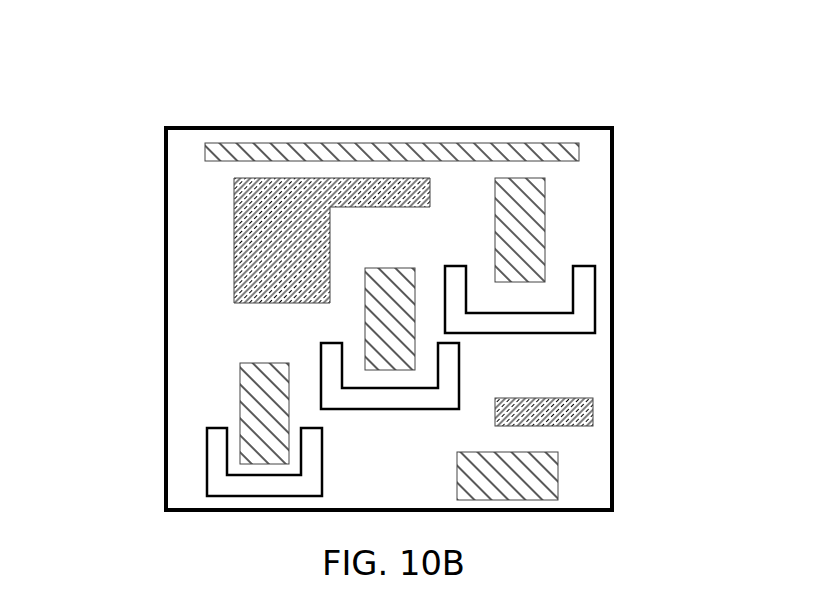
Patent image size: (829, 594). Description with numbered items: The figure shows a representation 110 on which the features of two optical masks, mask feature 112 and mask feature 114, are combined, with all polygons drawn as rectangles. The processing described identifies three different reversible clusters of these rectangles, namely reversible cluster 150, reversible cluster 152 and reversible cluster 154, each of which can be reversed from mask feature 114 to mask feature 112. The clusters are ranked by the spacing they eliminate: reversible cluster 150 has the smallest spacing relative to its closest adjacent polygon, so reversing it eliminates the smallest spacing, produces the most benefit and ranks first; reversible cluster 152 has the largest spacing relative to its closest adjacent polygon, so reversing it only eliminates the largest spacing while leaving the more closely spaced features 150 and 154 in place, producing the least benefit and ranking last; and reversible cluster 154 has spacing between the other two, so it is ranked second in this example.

The representation 110 is at (527, 113).
The mask feature 112 is at (234, 240).
The mask feature 114 is at (205, 152).
The reversible cluster 150 is at (207, 463).
The reversible cluster 152 is at (595, 297).
The reversible cluster 154 is at (460, 375).